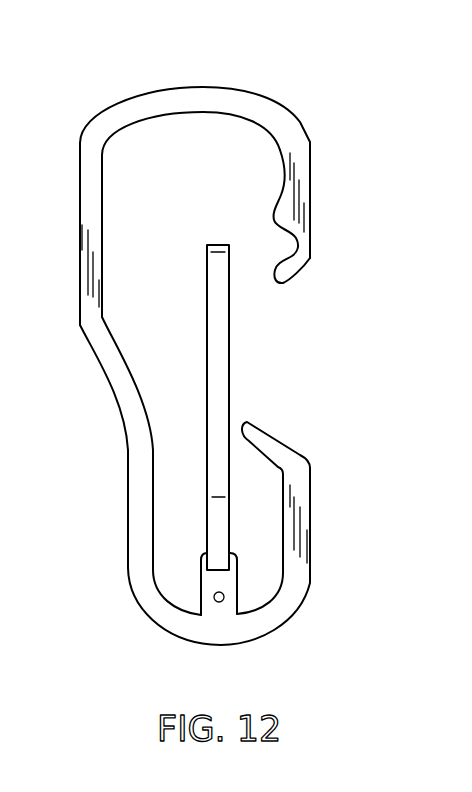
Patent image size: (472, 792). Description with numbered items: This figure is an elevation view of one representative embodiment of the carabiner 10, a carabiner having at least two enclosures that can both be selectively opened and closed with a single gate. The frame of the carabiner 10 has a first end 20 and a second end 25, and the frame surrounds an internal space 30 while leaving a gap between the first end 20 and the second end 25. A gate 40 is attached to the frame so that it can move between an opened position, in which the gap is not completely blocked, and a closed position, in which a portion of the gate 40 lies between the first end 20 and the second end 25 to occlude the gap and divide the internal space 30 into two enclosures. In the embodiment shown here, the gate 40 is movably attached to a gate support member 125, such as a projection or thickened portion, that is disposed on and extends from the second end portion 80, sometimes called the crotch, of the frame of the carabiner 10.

The carabiner 10 is at (97, 95).
The internal space 30 is at (228, 148).
The first end 20 is at (286, 290).
The gate 40 is at (220, 360).
The second end 25 is at (252, 416).
The gate support member 125 is at (200, 583).
The second end portion 80 is at (255, 603).